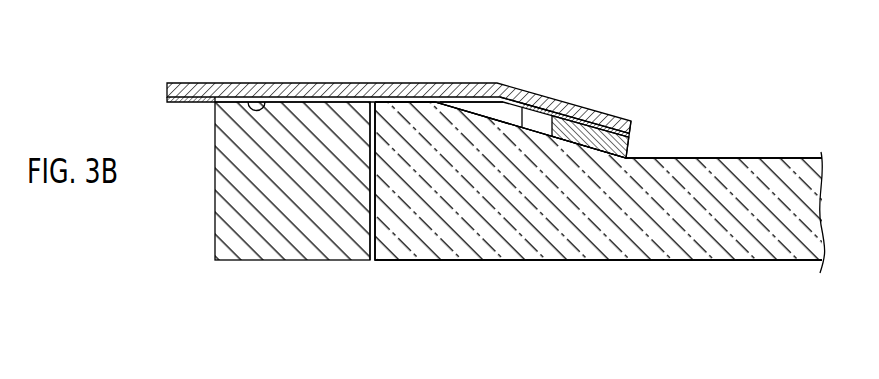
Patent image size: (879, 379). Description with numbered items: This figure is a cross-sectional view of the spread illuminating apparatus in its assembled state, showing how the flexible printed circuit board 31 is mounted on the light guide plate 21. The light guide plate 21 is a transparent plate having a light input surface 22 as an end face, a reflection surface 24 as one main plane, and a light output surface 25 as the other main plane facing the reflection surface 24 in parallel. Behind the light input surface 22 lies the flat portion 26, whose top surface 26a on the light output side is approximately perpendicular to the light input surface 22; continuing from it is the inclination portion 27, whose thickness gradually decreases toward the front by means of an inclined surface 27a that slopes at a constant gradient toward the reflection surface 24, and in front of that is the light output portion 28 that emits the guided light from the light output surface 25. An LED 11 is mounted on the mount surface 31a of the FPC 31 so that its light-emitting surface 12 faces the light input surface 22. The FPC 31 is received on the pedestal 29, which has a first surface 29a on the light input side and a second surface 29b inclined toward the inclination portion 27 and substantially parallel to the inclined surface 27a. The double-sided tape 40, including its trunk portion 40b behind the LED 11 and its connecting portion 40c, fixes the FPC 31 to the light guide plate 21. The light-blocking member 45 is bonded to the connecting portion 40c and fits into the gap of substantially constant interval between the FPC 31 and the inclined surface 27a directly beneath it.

The LED 11 is at (283, 243).
The light-emitting surface 12 is at (376, 238).
The light guide plate 21 is at (706, 312).
The light input surface 22 is at (375, 226).
The reflection surface 24 is at (790, 262).
The light output surface 25 is at (775, 158).
The flat portion 26 is at (417, 205).
The top surface 26a is at (398, 104).
The inclination portion 27 is at (564, 245).
The inclined surface 27a is at (549, 124).
The third portion of frame 28 is at (698, 245).
The pedestal 29 is at (480, 107).
The first surface 29a is at (489, 100).
The second surface 29b is at (567, 125).
The flexible printed circuit board 31 is at (320, 90).
The mount surface 31a is at (260, 104).
The double-sided tape 40 is at (522, 107).
The trunk portion 40b is at (196, 97).
The connecting portion 40c is at (598, 126).
The light-blocking member 45 is at (632, 148).